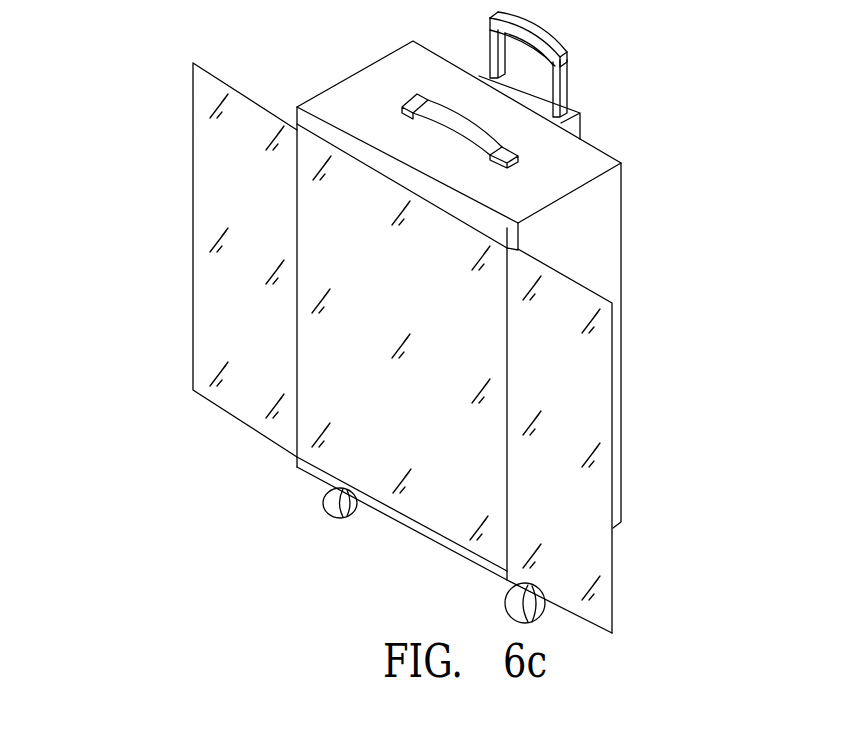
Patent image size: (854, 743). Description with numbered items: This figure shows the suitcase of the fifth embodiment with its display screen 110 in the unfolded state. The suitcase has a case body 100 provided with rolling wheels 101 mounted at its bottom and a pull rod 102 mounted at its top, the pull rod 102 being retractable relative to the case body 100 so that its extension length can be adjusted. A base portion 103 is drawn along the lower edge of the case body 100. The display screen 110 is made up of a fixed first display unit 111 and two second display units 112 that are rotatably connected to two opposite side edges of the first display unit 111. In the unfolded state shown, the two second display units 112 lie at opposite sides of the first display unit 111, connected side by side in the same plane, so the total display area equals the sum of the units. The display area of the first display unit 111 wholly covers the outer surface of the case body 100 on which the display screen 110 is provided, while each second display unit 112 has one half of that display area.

The case body 100 is at (633, 283).
The rolling wheels 101 is at (513, 600).
The pull rod 102 is at (563, 80).
The base plate 103 is at (425, 529).
The display screen 110 is at (112, 174).
The first display unit 111 is at (360, 384).
The second display unit 112 is at (242, 205).